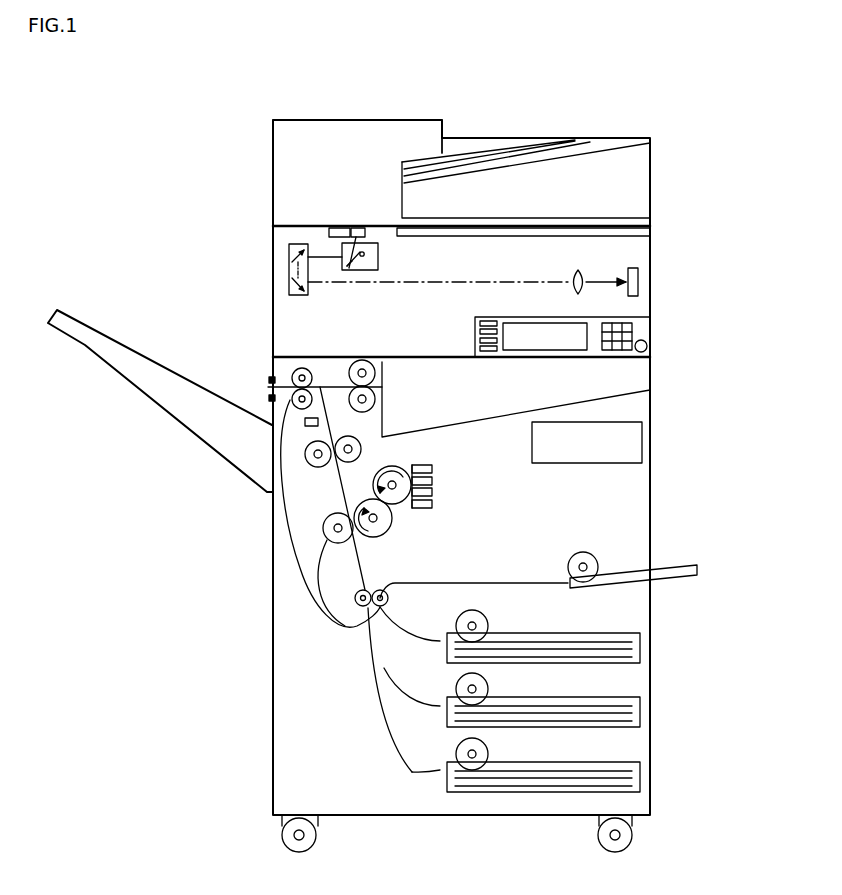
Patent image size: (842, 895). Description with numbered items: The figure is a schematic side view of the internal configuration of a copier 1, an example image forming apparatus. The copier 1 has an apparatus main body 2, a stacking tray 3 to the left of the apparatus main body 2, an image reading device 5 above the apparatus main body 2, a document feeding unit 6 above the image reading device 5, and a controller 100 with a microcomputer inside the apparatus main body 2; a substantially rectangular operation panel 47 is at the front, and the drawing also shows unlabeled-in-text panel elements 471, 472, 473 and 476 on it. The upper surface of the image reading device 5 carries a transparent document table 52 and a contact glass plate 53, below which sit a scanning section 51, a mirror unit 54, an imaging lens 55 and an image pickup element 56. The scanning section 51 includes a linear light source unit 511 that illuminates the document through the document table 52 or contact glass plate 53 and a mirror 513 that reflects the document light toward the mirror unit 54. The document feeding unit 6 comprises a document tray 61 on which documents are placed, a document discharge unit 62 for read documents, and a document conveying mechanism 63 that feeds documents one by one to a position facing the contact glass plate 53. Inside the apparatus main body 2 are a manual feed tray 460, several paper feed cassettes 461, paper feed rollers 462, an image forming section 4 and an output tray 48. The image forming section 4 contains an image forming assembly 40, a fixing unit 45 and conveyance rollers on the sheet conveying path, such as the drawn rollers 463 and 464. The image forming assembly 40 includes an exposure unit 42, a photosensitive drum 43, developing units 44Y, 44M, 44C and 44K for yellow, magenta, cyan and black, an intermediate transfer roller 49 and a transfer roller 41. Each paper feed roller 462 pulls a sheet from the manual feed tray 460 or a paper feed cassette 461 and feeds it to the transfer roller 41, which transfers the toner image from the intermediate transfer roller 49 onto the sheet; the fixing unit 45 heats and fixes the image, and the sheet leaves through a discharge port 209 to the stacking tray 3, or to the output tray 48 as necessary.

The copier 1 is at (103, 94).
The apparatus main body 2 is at (618, 495).
The stacking tray 3 is at (172, 422).
The image forming section 4 is at (390, 579).
The image reading device 5 is at (437, 260).
The document feeding unit 6 is at (526, 135).
The image forming assembly 40 is at (418, 504).
The transfer roller 41 is at (328, 585).
The exposure unit 42 is at (447, 491).
The photosensitive drum 43 is at (392, 504).
The developing unit for black 44K is at (432, 469).
The developing unit for cyan 44C is at (432, 481).
The developing unit for magenta 44M is at (432, 492).
The developing unit for yellow 44Y is at (432, 504).
The fixing unit 45 is at (327, 476).
The operation panel 47 is at (574, 340).
The output tray 48 is at (518, 413).
The intermediate transfer roller 49 is at (373, 537).
The scanning section 51 is at (375, 283).
The document table 52 is at (640, 233).
The contact glass plate 53 is at (340, 226).
The mirror unit 54 is at (289, 268).
The imaging lens 55 is at (583, 272).
The image pickup element 56 is at (640, 270).
The document tray 61 is at (580, 143).
The document discharge unit 62 is at (597, 218).
The document conveying mechanism 63 is at (313, 184).
The controller 100 is at (642, 440).
The discharge port 209 is at (270, 380).
The manual feed tray 460 is at (697, 570).
The paper feed cassettes 461 is at (640, 655).
The paper feed rollers 462 is at (586, 550).
The registration rollers 463 is at (375, 373).
The feed rollers 464 is at (273, 364).
The numeric keypad 471 is at (637, 356).
The start key 472 is at (597, 352).
The display 473 is at (520, 323).
The button 476 is at (637, 328).
The linear light source unit 511 is at (364, 254).
The mirror 513 is at (352, 270).